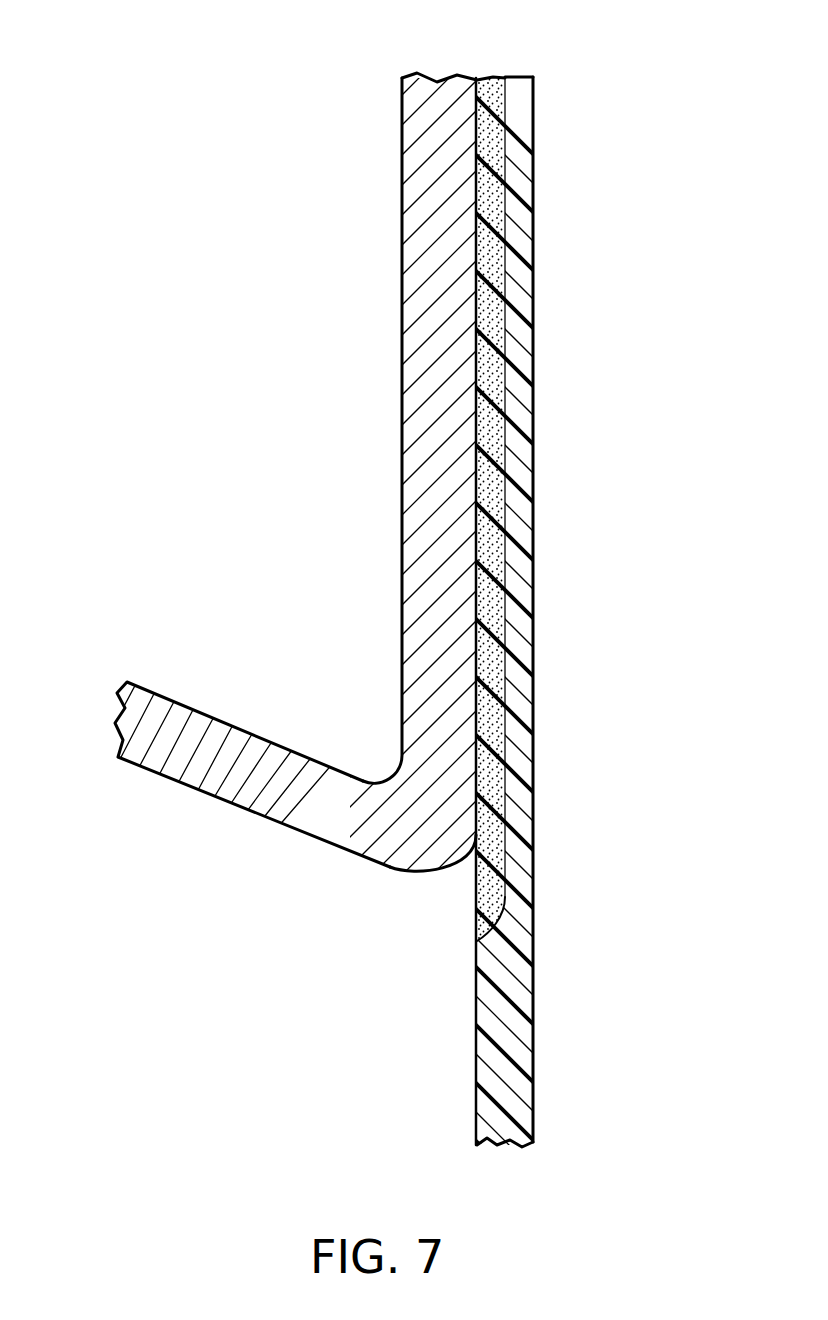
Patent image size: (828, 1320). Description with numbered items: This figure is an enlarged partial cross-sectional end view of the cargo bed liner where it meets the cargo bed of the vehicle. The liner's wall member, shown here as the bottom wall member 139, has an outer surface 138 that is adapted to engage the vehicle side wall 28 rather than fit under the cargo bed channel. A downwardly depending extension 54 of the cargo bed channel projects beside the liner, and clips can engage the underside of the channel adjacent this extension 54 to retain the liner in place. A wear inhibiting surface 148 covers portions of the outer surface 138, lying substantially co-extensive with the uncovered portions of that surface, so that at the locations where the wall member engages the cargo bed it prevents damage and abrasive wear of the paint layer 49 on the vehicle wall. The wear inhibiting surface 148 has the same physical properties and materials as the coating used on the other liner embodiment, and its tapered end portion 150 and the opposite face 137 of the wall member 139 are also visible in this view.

The side wall 28 is at (415, 78).
The downwardly depending extension 54 is at (248, 793).
The wear inhibiting surface 148 is at (488, 83).
The bottom wall member 139 is at (520, 100).
The paint layer 49 is at (485, 462).
The adhesive end portion 150 is at (475, 897).
The outer surface 137 is at (533, 1028).
The outer surface 138 is at (477, 1028).